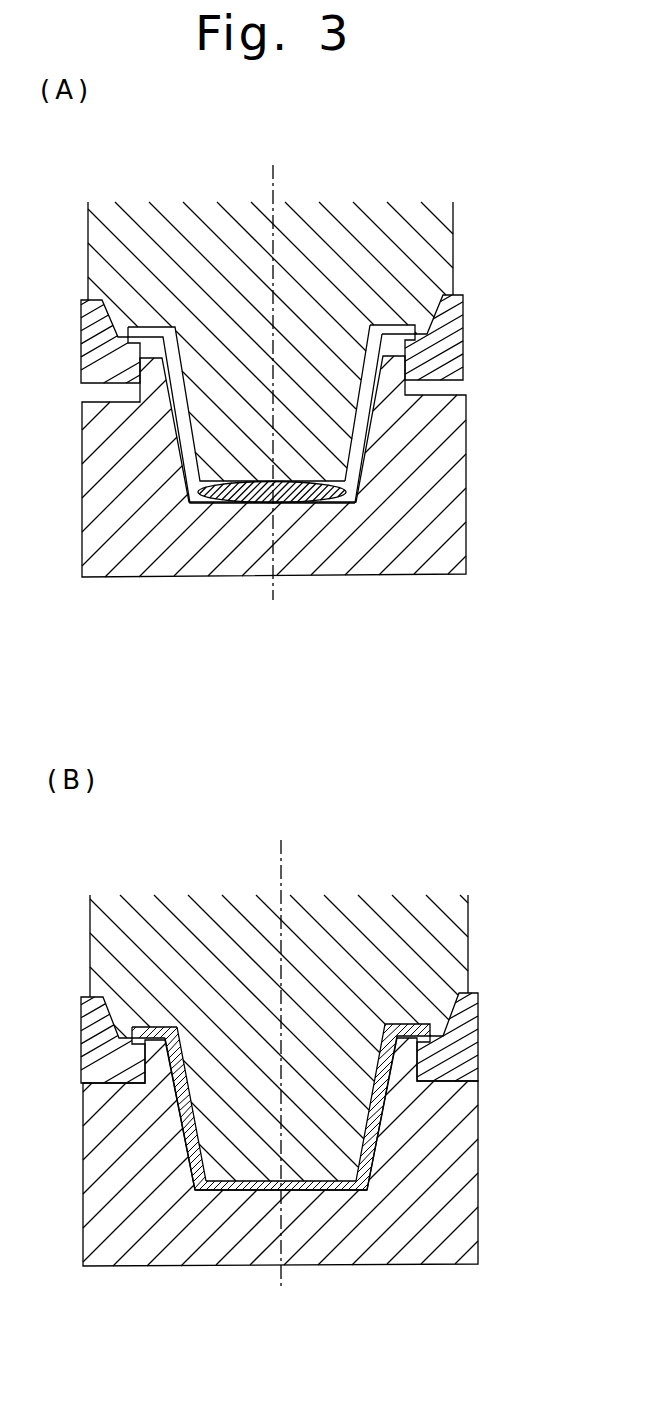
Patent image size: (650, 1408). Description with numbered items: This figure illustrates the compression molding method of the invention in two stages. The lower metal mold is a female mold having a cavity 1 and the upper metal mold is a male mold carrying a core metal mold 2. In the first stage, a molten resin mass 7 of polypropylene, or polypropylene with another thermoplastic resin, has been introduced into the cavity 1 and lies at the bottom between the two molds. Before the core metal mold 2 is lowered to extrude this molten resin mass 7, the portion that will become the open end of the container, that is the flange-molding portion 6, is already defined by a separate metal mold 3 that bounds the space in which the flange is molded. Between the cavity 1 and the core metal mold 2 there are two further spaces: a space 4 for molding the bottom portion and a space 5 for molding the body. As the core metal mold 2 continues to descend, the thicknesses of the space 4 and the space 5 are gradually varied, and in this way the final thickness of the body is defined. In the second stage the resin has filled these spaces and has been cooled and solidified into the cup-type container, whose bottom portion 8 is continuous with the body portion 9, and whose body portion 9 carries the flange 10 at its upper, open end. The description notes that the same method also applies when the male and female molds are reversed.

The cavity 1 is at (146, 532).
The core metal mold 2 is at (143, 242).
The metal mold 3 is at (97, 333).
The space for molding the bottom portion 4 is at (313, 485).
The space for molding the body 5 is at (365, 420).
The flange portion of sheet 6 is at (383, 345).
The molten resin mass 7 is at (290, 487).
The bottom portion 8 is at (305, 1188).
The body portion 9 is at (373, 1123).
The flange 10 is at (410, 1027).